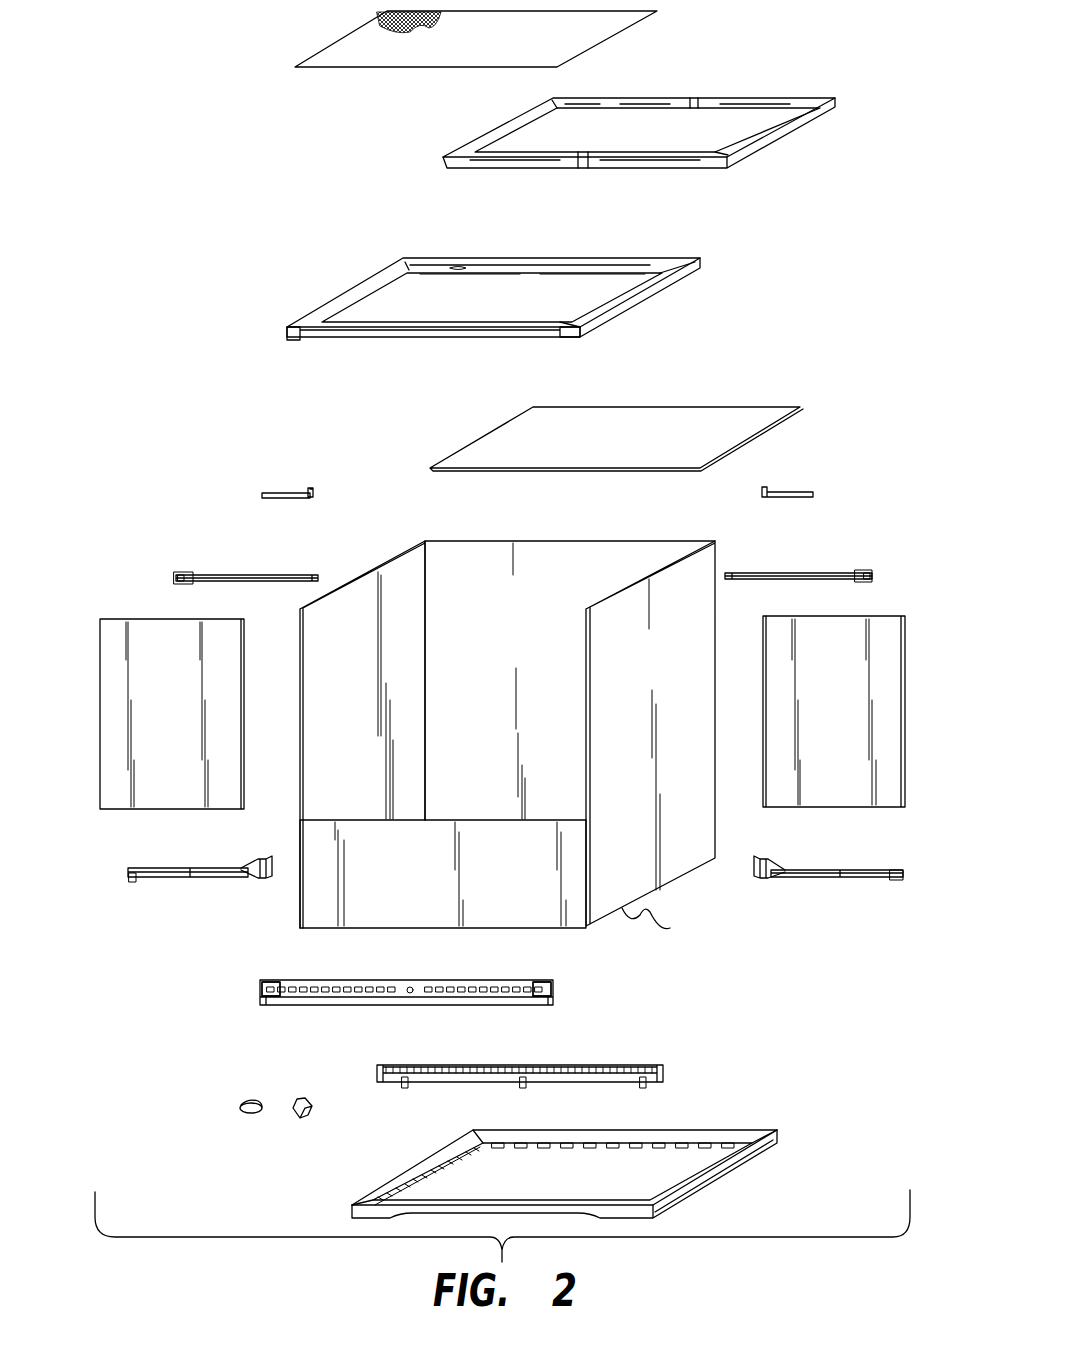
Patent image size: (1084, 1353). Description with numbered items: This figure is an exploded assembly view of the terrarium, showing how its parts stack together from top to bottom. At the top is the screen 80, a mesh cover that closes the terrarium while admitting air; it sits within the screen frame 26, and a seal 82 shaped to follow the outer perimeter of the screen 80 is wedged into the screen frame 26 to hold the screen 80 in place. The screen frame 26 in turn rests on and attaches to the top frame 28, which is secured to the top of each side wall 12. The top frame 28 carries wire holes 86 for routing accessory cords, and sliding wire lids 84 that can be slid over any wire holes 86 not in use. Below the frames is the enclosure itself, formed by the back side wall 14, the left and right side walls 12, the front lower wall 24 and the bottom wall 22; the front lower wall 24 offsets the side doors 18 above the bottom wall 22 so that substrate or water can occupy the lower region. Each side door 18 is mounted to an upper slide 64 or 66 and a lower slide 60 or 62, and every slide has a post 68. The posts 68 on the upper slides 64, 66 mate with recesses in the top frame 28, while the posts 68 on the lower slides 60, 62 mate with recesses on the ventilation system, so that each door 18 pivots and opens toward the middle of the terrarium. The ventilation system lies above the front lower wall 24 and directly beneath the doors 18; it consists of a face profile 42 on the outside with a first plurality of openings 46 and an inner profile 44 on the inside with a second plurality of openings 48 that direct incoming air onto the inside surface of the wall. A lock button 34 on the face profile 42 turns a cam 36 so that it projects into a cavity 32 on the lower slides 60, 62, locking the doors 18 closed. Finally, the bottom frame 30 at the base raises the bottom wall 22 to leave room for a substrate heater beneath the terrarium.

The side wall 12 is at (415, 578).
The back side wall 14 is at (572, 564).
The side door 18 is at (181, 810).
The bottom wall 22 is at (662, 926).
The front lower wall 24 is at (533, 906).
The screen frame 26 is at (813, 98).
The top frame 28 is at (533, 294).
The bottom frame 30 is at (763, 1130).
The cavity 32 is at (287, 859).
The lock button 34 is at (247, 1113).
The cam 36 is at (305, 1120).
The face profile 42 is at (376, 987).
The inner profile 44 is at (533, 1065).
The first plurality of openings 46 is at (353, 995).
The second plurality of openings 48 is at (620, 1063).
The lower left slide 60 is at (201, 877).
The lower right slide 62 is at (825, 884).
The upper left slide 64 is at (231, 565).
The upper right slide 66 is at (811, 563).
The post 68 is at (181, 573).
The screen 80 is at (353, 35).
The seal 82 is at (758, 405).
The sliding wire lid 84 is at (280, 492).
The wire hole 86 is at (432, 273).